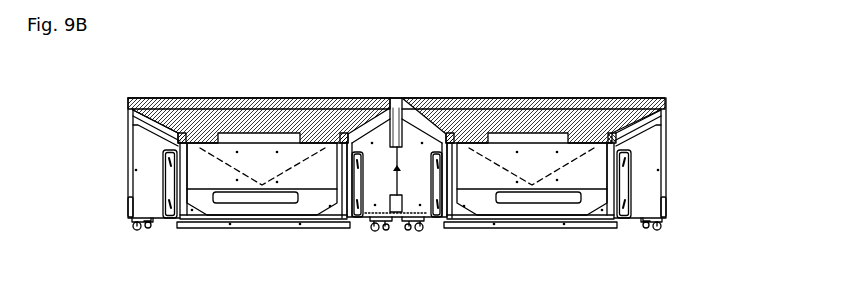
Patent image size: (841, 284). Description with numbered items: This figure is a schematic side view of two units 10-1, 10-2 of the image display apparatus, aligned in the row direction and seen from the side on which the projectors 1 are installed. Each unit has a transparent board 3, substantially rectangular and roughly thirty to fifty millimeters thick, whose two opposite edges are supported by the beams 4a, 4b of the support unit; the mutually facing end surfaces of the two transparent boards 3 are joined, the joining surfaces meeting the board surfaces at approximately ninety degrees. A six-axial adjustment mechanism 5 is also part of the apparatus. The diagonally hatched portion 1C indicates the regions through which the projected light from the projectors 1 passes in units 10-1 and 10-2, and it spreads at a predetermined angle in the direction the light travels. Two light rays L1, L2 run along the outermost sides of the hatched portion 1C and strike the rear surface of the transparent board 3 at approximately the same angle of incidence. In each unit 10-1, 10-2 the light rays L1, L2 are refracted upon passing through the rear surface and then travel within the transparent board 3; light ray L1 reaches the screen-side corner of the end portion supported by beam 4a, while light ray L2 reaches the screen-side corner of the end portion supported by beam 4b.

The projector 1 is at (291, 198).
The hatched portion 1C is at (247, 98).
The transparent board 3 is at (128, 100).
The beam 4a is at (383, 98).
The beam 4b is at (128, 113).
The six-axial adjustment mechanism 5 is at (233, 228).
The unit 10-1 is at (121, 191).
The unit 10-2 is at (674, 165).
The light ray L1 is at (378, 130).
The light ray L2 is at (150, 130).